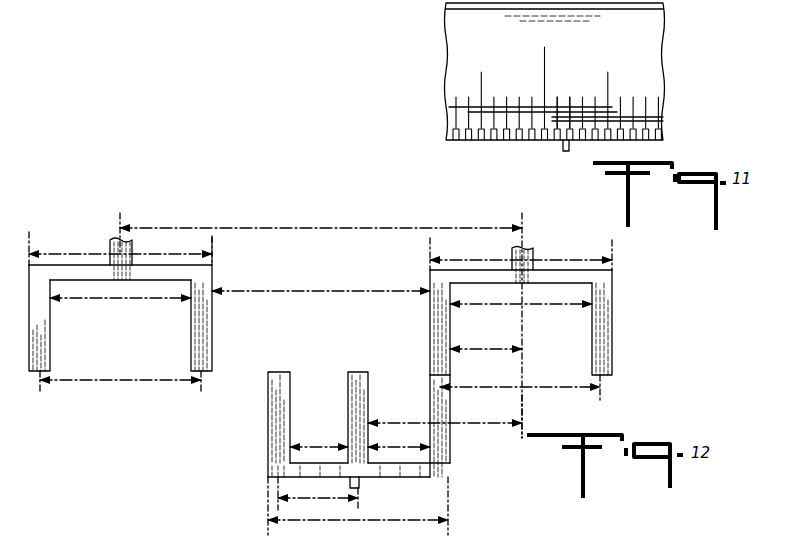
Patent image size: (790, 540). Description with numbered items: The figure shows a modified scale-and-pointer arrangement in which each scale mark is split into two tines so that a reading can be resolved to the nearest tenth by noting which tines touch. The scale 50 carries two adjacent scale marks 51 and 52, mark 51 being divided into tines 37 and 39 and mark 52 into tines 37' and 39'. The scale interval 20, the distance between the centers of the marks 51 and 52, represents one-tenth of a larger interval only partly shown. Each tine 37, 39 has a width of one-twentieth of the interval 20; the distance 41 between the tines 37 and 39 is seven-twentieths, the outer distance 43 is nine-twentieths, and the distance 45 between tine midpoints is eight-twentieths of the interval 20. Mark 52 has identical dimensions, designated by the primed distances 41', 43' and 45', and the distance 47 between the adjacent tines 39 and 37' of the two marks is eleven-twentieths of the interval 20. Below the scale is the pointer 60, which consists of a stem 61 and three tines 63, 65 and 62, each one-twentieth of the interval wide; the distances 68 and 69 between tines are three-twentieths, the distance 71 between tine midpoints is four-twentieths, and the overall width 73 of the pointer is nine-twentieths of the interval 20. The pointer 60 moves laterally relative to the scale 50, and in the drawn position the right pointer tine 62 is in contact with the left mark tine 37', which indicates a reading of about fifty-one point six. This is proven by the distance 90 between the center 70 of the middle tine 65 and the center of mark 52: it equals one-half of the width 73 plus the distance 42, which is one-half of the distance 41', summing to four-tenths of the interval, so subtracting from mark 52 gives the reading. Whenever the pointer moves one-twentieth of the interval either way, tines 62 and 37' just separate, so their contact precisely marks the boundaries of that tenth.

In FIG. 12, the scale interval 20 is at (292, 228).
In FIG. 12, the tine 37 is at (54, 318).
In FIG. 12, the tine 39 is at (191, 318).
In FIG. 12, the distance between tines 41 is at (120, 307).
In FIG. 12, the distance 43 is at (120, 248).
In FIG. 12, the distance between midpoints 45 is at (120, 378).
In FIG. 12, the distance between adjacent tines 47 is at (317, 291).
In FIG. 11, the circuit board 50 is at (546, 79).
In FIG. 11, the scale mark 51 is at (560, 97).
In FIG. 12, the scale mark 51 is at (129, 242).
In FIG. 11, the scale mark 52 is at (573, 99).
In FIG. 12, the scale mark 52 is at (530, 249).
In FIG. 11, the stem 61 is at (566, 152).
In FIG. 12, the stem 61 is at (359, 482).
In FIG. 12, the tine 37' is at (424, 322).
In FIG. 12, the tine 39' is at (617, 322).
In FIG. 12, the distance between tines 41' is at (521, 313).
In FIG. 12, the distance 43' is at (521, 255).
In FIG. 12, the distance between midpoints 45' is at (520, 384).
In FIG. 12, the distance 42 is at (488, 349).
In FIG. 12, the pointer 60 is at (354, 428).
In FIG. 12, the right pointer tine 62 is at (448, 442).
In FIG. 12, the pointer tine 63 is at (294, 386).
In FIG. 12, the middle tine 65 is at (368, 372).
In FIG. 12, the distance between tines 68 is at (313, 447).
In FIG. 12, the distance between tines 69 is at (396, 447).
In FIG. 12, the center of middle tine 70 is at (368, 413).
In FIG. 12, the distance between midpoints of tines 71 is at (321, 498).
In FIG. 12, the overall width of the pointer 73 is at (400, 520).
In FIG. 12, the distance 90 is at (494, 425).